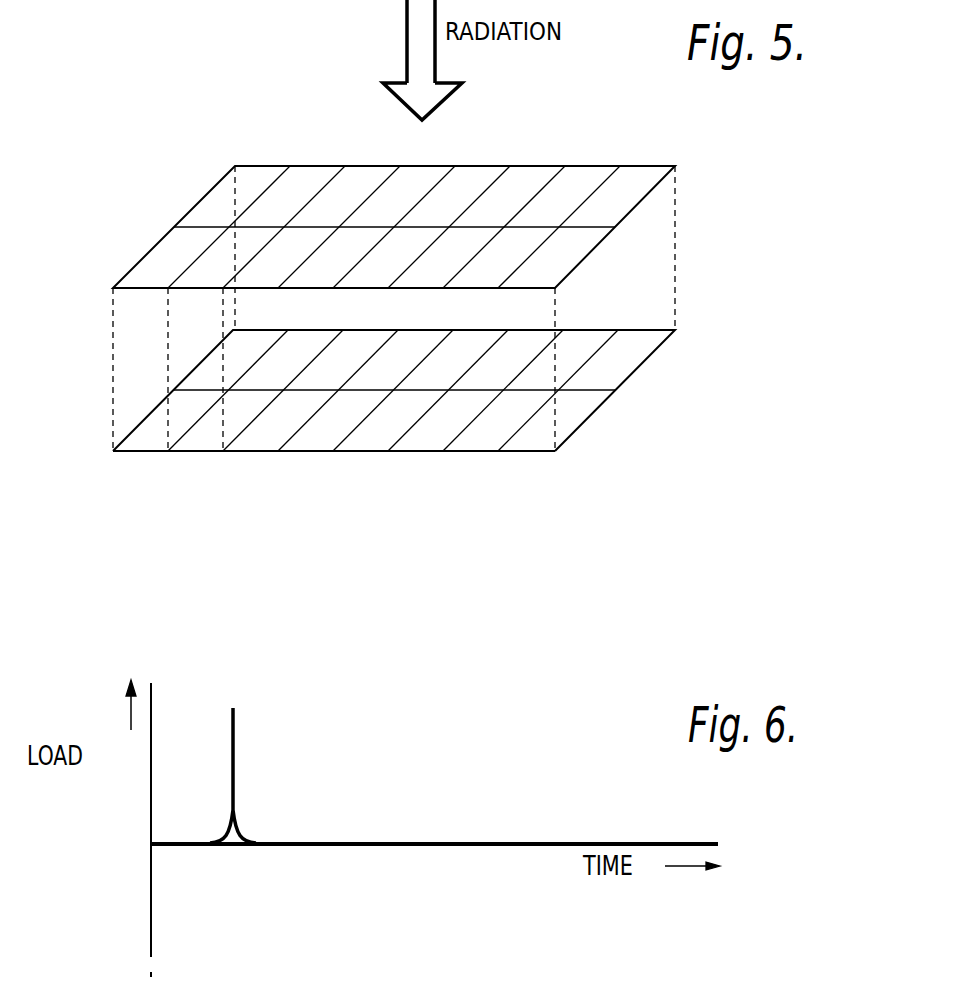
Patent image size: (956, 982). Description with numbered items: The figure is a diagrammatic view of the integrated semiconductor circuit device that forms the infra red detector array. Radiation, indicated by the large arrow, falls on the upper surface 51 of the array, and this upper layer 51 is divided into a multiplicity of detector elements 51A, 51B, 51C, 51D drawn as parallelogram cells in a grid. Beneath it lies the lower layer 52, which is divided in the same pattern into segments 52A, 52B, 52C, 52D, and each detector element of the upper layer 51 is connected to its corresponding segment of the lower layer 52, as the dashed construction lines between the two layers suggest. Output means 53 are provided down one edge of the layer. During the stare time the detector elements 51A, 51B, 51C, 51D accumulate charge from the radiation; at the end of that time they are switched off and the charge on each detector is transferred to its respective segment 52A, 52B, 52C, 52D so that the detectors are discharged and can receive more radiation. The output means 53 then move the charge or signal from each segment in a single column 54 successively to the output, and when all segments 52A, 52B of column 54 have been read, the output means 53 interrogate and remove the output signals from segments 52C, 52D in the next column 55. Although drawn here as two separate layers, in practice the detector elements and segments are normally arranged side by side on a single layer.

The upper surface 51 is at (640, 200).
The detector element 51A is at (158, 257).
The detector element 51B is at (222, 195).
The detector element 51C is at (210, 277).
The detector element 51D is at (313, 178).
The lower layer 52 is at (643, 365).
The segment 52A is at (158, 433).
The segment 52B is at (217, 366).
The segment 52C is at (213, 438).
The segment 52D is at (307, 342).
The output means 53 is at (315, 453).
The column 54 is at (124, 460).
The next column 55 is at (183, 461).